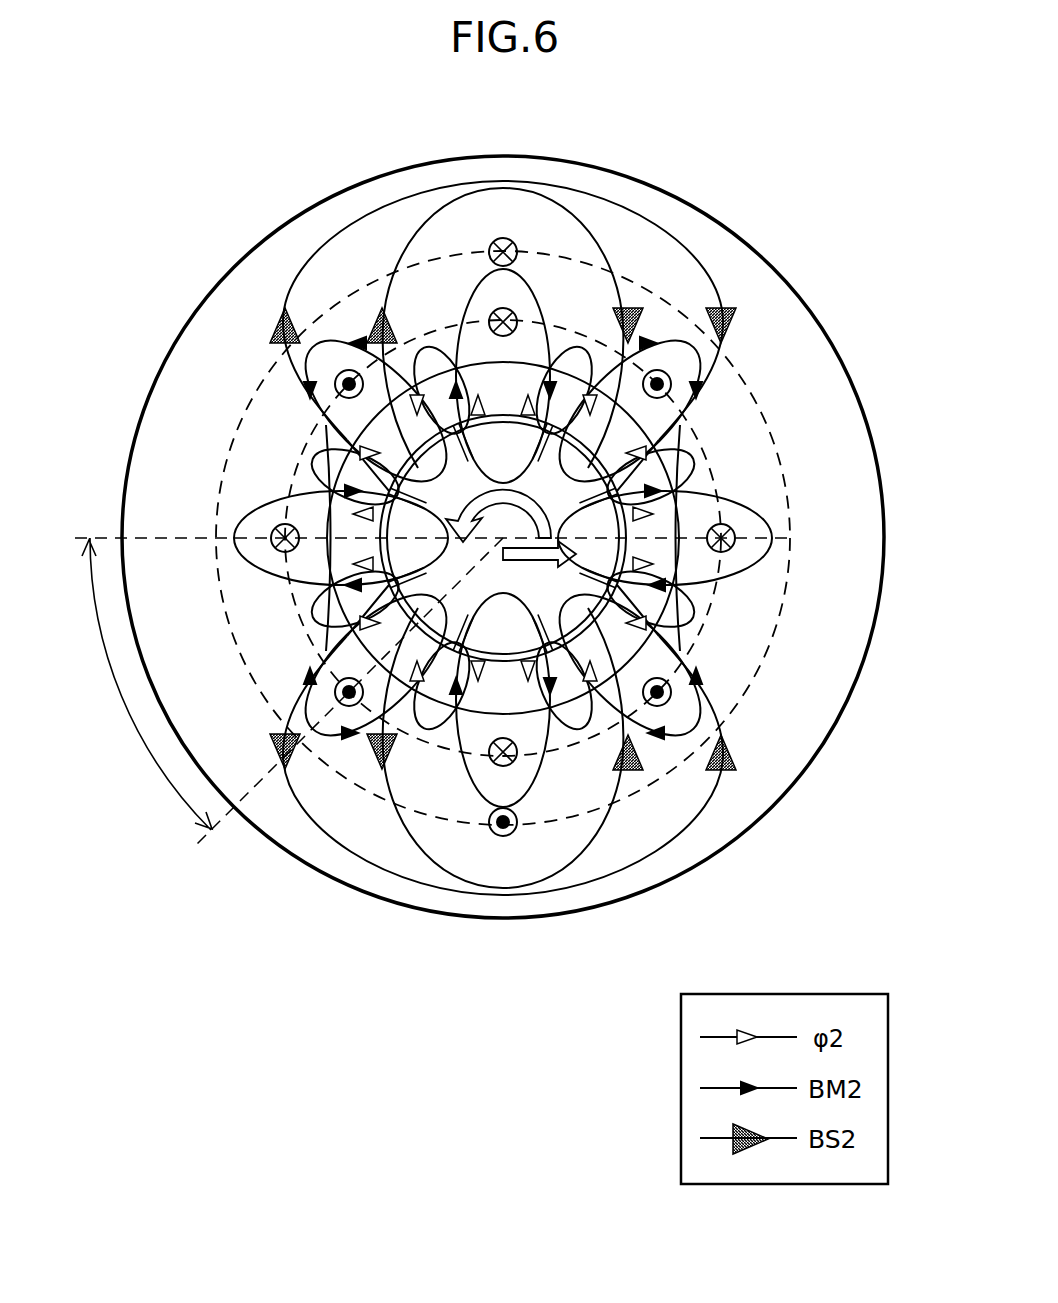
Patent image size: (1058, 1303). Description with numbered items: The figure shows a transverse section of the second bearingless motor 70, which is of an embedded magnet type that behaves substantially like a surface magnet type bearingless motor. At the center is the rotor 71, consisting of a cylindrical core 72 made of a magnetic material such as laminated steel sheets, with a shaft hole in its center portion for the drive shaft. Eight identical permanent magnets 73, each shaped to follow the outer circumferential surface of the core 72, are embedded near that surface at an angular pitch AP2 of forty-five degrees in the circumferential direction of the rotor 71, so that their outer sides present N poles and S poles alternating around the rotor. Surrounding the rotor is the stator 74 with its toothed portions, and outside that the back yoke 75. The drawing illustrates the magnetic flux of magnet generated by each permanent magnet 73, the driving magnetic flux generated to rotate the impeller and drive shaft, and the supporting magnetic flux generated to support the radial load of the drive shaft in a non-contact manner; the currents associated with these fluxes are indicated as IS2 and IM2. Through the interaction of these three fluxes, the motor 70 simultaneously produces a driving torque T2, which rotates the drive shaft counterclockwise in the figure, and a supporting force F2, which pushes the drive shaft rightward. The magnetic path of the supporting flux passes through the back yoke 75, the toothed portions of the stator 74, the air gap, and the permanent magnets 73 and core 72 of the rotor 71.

The second bearingless motor 70 is at (786, 171).
The rotor 71 is at (562, 453).
The core 72 is at (600, 455).
The permanent magnets 73 is at (655, 668).
The stator 74 is at (677, 190).
The back yoke 75 is at (590, 181).
The stator current IS2 is at (503, 238).
The magnetizing current IM2 is at (280, 524).
The angular pitch AP2 is at (131, 684).
The driving torque T2 is at (498, 516).
The supporting force F2 is at (536, 568).